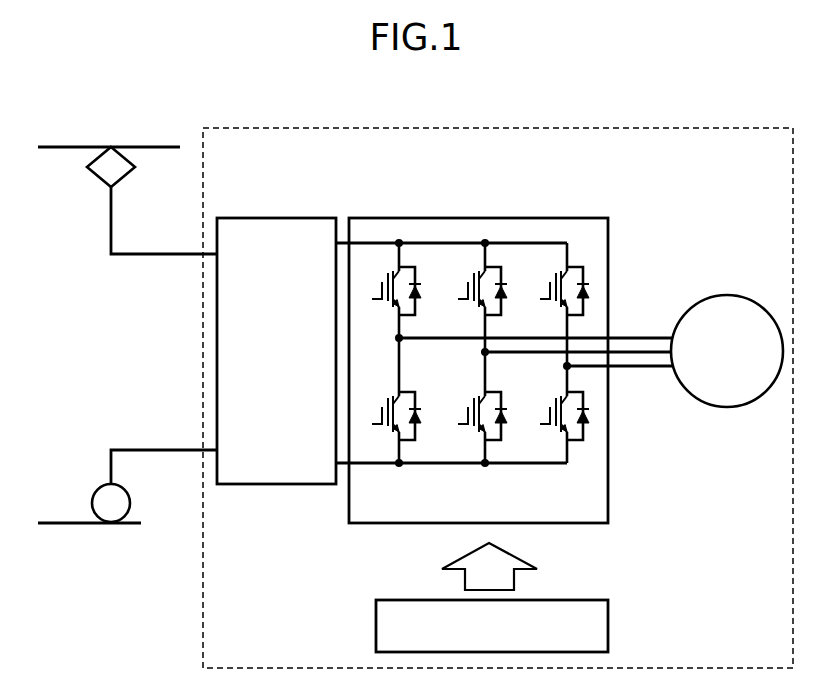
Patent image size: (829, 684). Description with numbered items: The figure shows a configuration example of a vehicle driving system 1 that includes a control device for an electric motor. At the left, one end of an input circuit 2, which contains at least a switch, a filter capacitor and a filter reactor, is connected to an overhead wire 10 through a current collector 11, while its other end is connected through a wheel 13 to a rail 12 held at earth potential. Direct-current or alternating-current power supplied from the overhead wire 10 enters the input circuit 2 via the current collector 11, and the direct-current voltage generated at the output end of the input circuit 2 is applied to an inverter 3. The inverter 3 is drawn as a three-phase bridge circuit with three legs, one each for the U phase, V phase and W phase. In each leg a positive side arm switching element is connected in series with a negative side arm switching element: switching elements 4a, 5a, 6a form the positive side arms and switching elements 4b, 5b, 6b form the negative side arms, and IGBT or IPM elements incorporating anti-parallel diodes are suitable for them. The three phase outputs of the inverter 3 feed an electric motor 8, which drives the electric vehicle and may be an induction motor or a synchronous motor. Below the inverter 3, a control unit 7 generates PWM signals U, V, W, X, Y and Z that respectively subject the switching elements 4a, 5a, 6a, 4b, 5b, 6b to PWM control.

The vehicle driving system 1 is at (663, 128).
The input circuit 2 is at (278, 218).
The inverter 3 is at (405, 218).
The switching element 4a is at (417, 270).
The switching element 4b is at (415, 400).
The switching element 5a is at (503, 270).
The switching element 5b is at (501, 400).
The switching element 6a is at (585, 270).
The switching element 6b is at (585, 398).
The control unit 7 is at (608, 626).
The electric motor 8 is at (738, 409).
The overhead wire 10 is at (53, 147).
The current collector 11 is at (100, 178).
The rail 12 is at (90, 523).
The wheel 13 is at (97, 487).